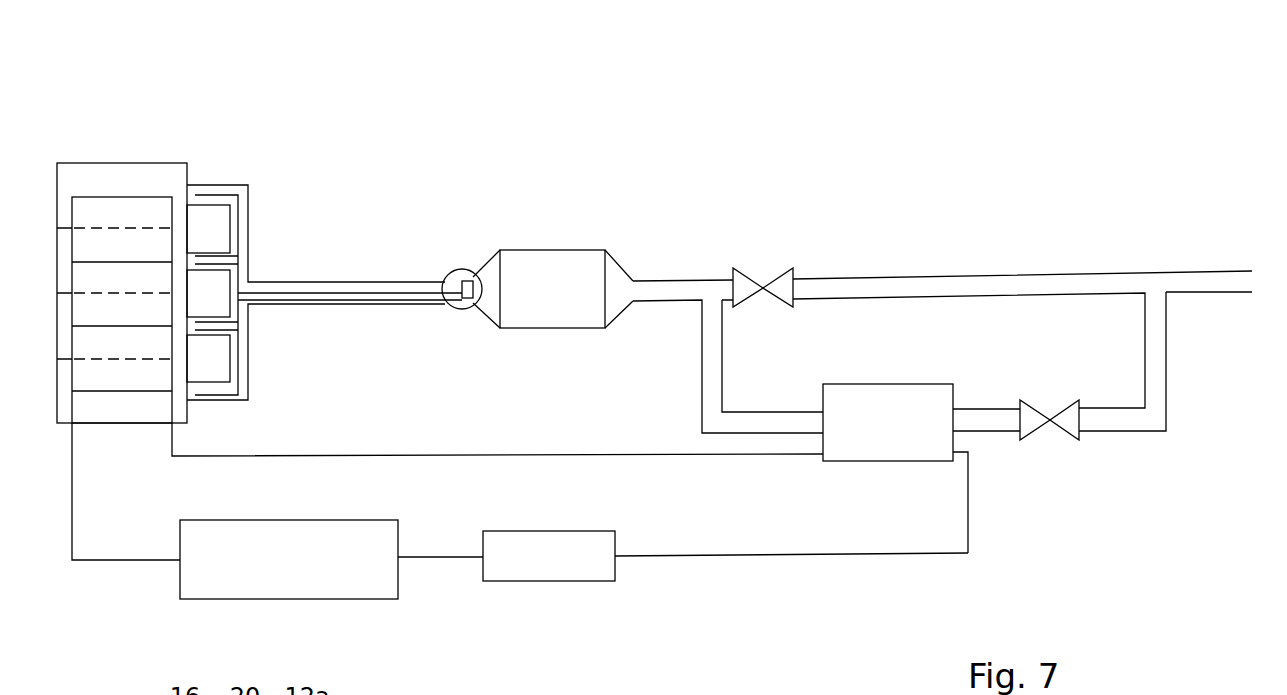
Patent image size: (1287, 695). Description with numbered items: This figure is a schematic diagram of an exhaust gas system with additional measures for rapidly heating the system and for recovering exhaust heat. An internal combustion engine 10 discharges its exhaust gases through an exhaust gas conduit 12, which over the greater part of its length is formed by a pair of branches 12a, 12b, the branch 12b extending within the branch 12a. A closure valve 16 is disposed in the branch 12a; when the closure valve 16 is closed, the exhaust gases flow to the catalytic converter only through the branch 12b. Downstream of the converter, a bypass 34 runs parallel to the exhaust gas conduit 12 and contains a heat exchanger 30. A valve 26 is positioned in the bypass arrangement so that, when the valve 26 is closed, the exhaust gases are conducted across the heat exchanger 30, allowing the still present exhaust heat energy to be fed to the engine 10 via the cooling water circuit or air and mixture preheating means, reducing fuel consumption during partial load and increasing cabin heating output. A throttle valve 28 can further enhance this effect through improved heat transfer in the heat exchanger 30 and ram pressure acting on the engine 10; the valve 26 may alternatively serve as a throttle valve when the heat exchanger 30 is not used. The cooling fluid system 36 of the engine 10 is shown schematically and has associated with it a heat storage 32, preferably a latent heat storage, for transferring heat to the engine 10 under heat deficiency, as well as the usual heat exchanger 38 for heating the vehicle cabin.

The internal combustion engine 10 is at (113, 185).
The exhaust gas conduit 12 is at (673, 273).
The branch 12a is at (355, 293).
The branch 12b is at (293, 282).
The closure valve 16 is at (473, 270).
The valve 26 is at (763, 288).
The throttle valve 28 is at (1050, 420).
The heat exchanger 30 is at (898, 383).
The heat storage 32 is at (363, 599).
The bypass 34 is at (786, 433).
The cooling fluid system 36 is at (688, 556).
The heat exchanger 38 is at (563, 582).